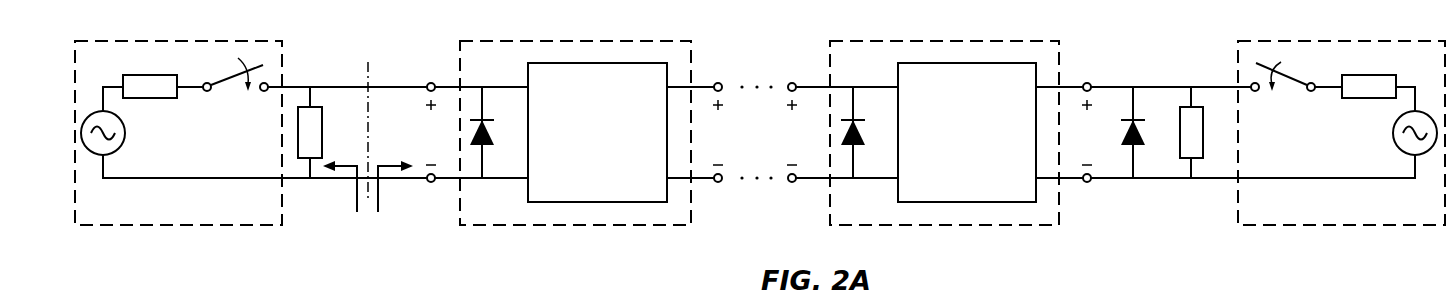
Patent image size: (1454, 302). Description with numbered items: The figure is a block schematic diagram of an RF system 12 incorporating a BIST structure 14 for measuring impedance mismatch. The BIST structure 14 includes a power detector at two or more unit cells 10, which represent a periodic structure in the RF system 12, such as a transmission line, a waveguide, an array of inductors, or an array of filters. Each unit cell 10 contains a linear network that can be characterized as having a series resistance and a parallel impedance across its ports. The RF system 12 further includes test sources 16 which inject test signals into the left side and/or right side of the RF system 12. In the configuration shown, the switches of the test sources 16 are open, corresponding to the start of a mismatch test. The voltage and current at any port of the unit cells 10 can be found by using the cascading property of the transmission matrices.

The unit cell 10 is at (692, 55).
The RF system 12 is at (302, 30).
The BIST structure 14 is at (428, 32).
The test source 16 is at (185, 40).